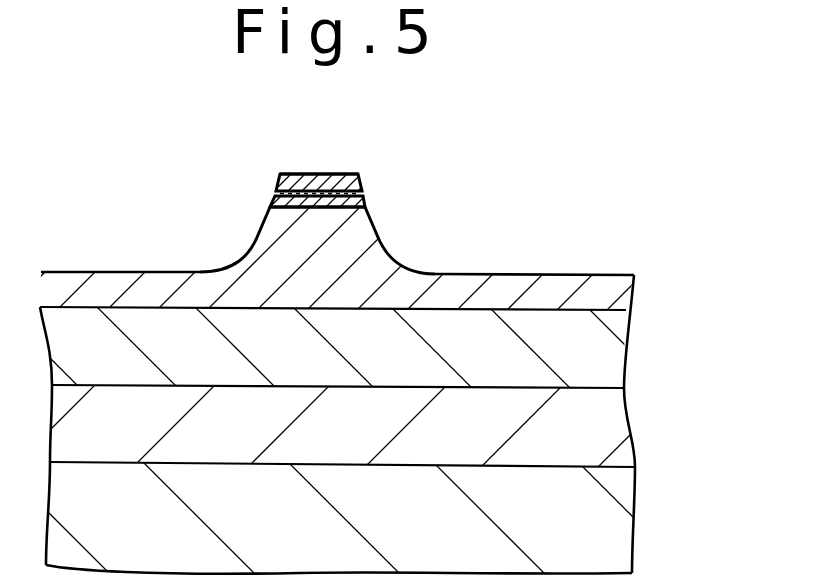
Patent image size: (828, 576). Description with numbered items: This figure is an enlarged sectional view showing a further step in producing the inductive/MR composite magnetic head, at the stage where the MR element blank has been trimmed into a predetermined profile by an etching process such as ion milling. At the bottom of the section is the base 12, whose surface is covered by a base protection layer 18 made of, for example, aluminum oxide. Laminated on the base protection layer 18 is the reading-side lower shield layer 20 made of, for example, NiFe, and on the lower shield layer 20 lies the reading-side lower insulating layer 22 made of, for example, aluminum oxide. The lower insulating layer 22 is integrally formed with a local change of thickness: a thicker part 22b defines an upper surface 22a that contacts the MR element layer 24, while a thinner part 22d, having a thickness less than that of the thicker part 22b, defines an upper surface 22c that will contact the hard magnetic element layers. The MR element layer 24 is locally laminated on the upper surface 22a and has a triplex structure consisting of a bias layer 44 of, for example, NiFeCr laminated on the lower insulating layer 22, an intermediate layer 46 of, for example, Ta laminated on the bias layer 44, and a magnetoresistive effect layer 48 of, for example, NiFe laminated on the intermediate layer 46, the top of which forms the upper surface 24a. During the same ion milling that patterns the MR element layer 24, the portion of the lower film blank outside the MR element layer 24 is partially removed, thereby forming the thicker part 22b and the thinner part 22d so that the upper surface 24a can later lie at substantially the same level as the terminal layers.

The base 12 is at (583, 522).
The base protection layer 18 is at (590, 438).
The reading-side lower shield layer 20 is at (597, 362).
The reading-side lower insulating layer 22 is at (373, 237).
The upper surface of thicker part 22a is at (364, 206).
The thicker part 22b is at (338, 240).
The upper surface of thinner part 22c is at (107, 272).
The thinner part 22d is at (503, 292).
The magnetoresistive element layer 24 is at (244, 165).
The upper surface of MR element layer 24a is at (292, 178).
The bias layer 44 is at (273, 203).
The intermediate layer 46 is at (279, 191).
The magnetoresistive effect layer 48 is at (287, 178).